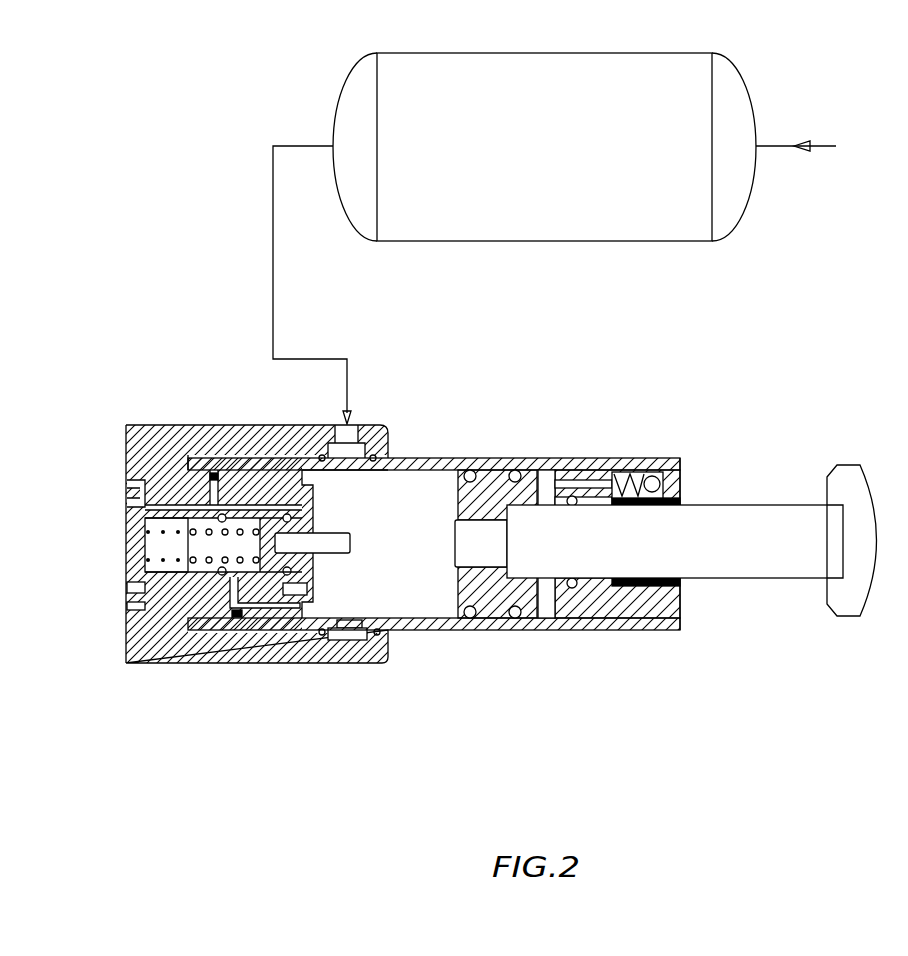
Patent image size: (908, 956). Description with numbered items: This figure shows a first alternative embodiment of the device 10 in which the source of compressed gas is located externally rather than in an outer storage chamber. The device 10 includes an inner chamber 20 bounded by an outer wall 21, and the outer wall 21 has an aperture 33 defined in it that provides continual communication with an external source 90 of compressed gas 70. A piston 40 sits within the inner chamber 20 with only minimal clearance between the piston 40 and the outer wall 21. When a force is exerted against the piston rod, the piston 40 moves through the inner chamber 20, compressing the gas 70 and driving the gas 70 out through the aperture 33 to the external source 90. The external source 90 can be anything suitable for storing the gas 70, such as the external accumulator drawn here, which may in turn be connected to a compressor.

The device 10 is at (688, 453).
The inner chamber 20 is at (413, 587).
The outer wall 21 is at (478, 627).
The aperture 33 is at (350, 628).
The piston 40 is at (527, 597).
The compressed gas 70 is at (413, 500).
The external source of compressed gas 90 is at (564, 212).